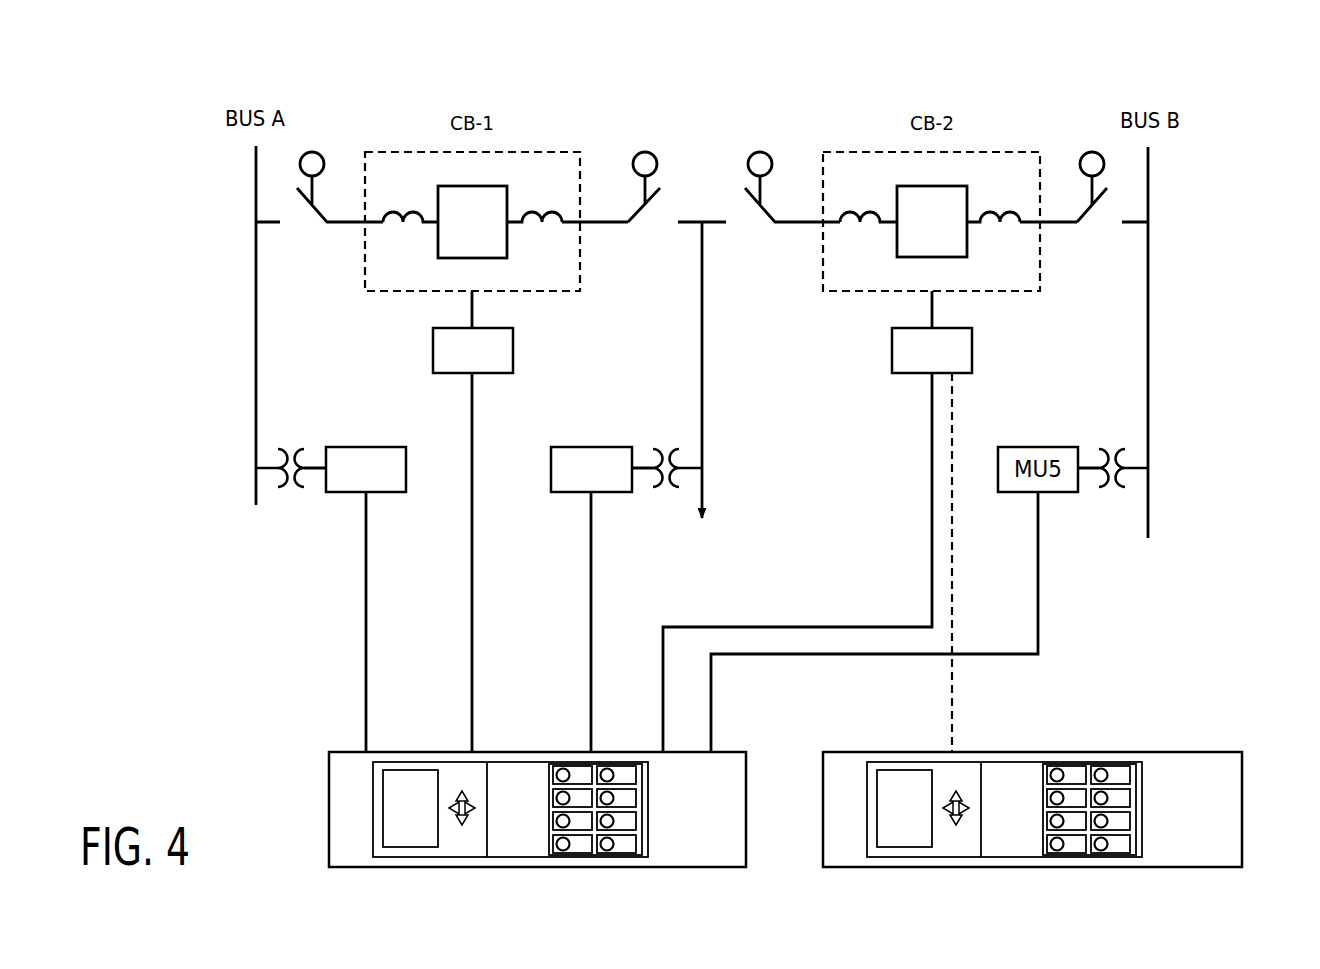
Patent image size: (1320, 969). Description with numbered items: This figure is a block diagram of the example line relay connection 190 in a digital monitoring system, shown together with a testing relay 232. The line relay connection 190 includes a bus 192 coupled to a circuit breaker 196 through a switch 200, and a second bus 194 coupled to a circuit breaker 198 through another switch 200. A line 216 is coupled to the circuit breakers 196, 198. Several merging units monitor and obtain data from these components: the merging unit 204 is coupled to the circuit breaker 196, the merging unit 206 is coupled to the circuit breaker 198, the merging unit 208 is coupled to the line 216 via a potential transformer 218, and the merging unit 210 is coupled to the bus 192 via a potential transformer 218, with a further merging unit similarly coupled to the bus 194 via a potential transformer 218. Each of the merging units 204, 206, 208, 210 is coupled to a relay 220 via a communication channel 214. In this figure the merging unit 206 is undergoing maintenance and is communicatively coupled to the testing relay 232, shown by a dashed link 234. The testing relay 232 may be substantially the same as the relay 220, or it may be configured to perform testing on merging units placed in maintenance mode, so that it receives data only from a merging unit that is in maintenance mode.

The line relay connection 190 is at (865, 68).
The bus 192 is at (256, 255).
The bus 194 is at (1148, 255).
The circuit breaker 196 is at (483, 186).
The circuit breaker 198 is at (943, 186).
The switch 200 is at (332, 150).
The merging unit 204 is at (433, 348).
The merging unit 206 is at (892, 348).
The merging unit 208 is at (551, 470).
The merging unit 210 is at (406, 470).
The communication channel 214 is at (366, 638).
The line 216 is at (702, 437).
The potential transformer 218 is at (667, 442).
The relay 220 is at (746, 778).
The testing relay 232 is at (1242, 813).
The dashed communication link 234 is at (952, 692).